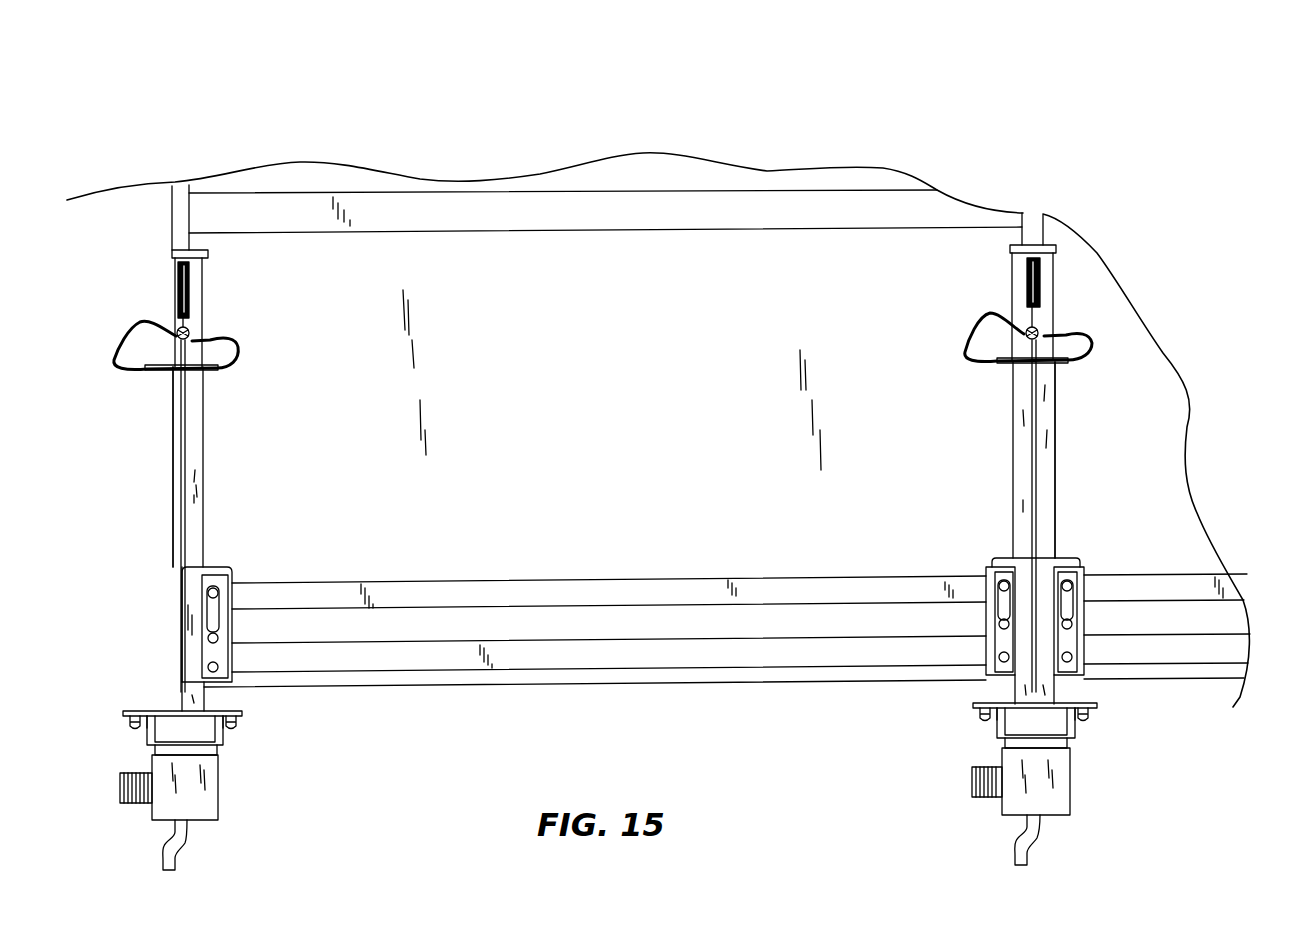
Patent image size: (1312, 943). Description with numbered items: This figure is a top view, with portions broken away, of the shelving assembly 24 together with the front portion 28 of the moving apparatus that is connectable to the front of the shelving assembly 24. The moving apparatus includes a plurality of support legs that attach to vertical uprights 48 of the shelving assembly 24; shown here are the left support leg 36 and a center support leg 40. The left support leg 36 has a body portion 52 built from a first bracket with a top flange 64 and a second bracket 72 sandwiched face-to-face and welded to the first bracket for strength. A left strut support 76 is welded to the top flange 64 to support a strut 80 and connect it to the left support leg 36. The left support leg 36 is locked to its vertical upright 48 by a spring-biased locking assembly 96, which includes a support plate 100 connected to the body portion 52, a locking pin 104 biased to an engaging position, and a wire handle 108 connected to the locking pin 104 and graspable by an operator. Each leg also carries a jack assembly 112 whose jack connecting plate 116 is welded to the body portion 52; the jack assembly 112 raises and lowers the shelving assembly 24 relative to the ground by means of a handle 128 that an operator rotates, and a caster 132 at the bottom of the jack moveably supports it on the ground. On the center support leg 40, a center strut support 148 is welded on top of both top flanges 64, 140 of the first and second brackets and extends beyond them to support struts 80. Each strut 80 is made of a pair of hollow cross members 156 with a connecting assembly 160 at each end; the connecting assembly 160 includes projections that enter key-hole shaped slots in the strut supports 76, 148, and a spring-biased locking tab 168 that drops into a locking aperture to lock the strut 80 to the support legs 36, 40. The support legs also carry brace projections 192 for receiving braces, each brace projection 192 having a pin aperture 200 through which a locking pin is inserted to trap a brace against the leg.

The shelving assembly 24 is at (778, 188).
The front portion 28 is at (1141, 353).
The left support leg 36 is at (206, 451).
The center support leg 40 is at (1001, 500).
The vertical upright 48 is at (178, 223).
The body portion 52 is at (183, 490).
The top flange 64 is at (196, 401).
The second bracket 72 is at (180, 432).
The left strut support 76 is at (190, 598).
The strut 80 is at (665, 580).
The locking assembly 96 is at (200, 292).
The support plate 100 is at (200, 254).
The locking pin 104 is at (190, 329).
The wire handle 108 is at (156, 371).
The jack assembly 112 is at (242, 797).
The jack connecting plate 116 is at (147, 740).
The handle 128 is at (178, 857).
The caster 132 is at (136, 805).
The top flange 140 is at (1018, 414).
The center strut support 148 is at (1063, 558).
The cross member 156 is at (470, 590).
The connecting assembly 160 is at (231, 577).
The locking tab 168 is at (218, 613).
The brace projection 192 is at (128, 727).
The pin aperture 200 is at (231, 726).